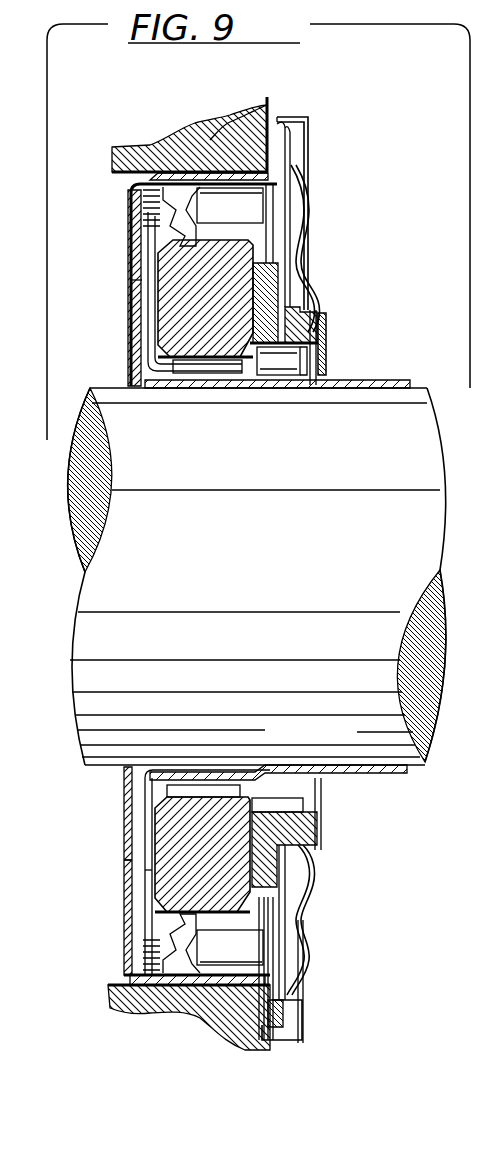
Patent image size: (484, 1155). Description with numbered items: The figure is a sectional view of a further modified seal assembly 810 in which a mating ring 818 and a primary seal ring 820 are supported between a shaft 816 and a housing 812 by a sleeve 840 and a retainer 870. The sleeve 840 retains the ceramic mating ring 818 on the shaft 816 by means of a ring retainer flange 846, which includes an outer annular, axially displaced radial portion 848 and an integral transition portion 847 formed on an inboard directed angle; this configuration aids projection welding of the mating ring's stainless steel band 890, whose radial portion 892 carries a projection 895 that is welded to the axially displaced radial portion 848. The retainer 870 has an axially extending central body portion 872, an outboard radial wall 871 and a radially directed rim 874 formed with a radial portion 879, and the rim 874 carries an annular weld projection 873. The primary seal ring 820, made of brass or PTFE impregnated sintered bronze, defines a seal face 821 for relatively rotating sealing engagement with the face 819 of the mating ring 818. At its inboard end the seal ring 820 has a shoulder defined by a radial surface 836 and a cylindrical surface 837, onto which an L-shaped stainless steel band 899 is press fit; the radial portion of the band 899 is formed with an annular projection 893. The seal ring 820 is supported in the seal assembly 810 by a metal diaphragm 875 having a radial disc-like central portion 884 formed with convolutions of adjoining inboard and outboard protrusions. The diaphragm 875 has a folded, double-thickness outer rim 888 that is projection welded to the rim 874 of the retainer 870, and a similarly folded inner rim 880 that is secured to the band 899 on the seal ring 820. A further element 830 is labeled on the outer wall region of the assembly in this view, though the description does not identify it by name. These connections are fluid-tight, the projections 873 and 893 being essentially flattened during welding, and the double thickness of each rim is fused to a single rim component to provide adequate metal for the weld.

The seal assembly 810 is at (334, 172).
The housing 812 is at (124, 150).
The shaft 816 is at (405, 435).
The mating ring 818 is at (177, 323).
The face 819 is at (300, 935).
The seal ring 820 is at (298, 300).
The seal face 821 is at (247, 828).
The outer ring wall 830 is at (327, 322).
The radial surface 836 is at (300, 300).
The cylindrical surface 837 is at (290, 298).
The sleeve 840 is at (361, 365).
The ring retainer flange 846 is at (148, 870).
The transition portion 847 is at (147, 228).
The axially displaced radial portion 848 is at (165, 207).
The retainer 870 is at (118, 851).
The outboard radial wall 871 is at (143, 281).
The central body portion 872 is at (155, 175).
The annular weld projection 873 is at (270, 100).
The rim 874 is at (290, 157).
The metal diaphragm 875 is at (303, 923).
The radial portion 879 is at (287, 1040).
The inner rim 880 is at (318, 787).
The central portion 884 is at (302, 972).
The outer rim 888 is at (270, 1048).
The stainless steel band 890 is at (263, 223).
The radial portion 892 is at (143, 172).
The annular projection 893 is at (280, 777).
The projection 895 is at (160, 934).
The stainless steel band 899 is at (313, 858).